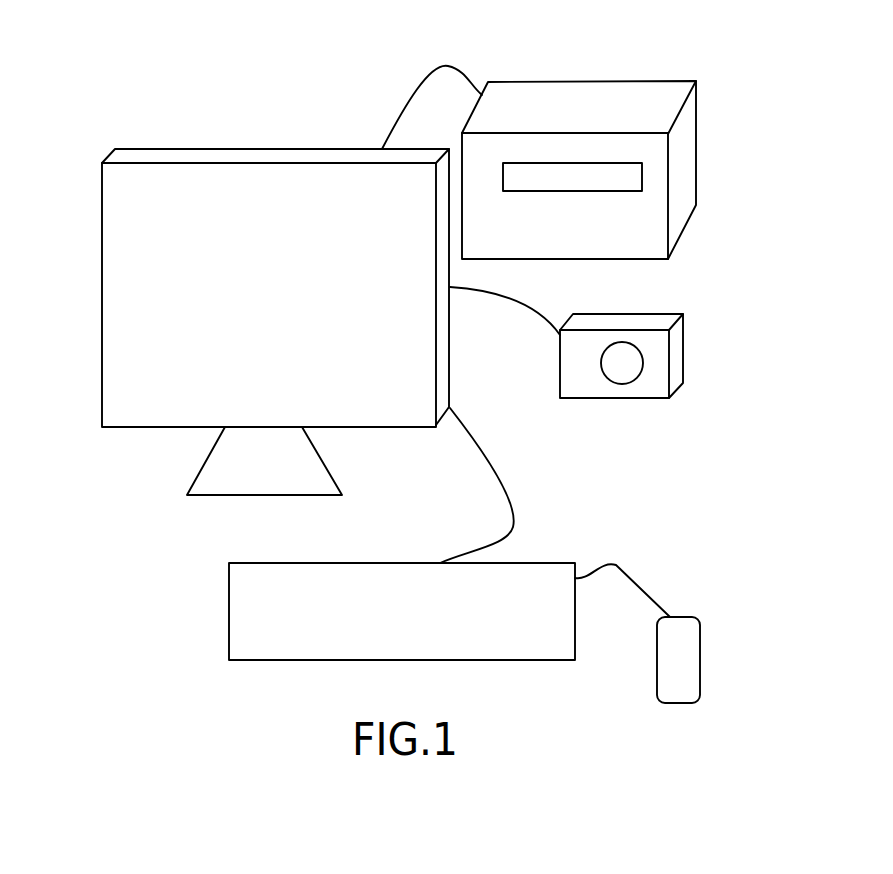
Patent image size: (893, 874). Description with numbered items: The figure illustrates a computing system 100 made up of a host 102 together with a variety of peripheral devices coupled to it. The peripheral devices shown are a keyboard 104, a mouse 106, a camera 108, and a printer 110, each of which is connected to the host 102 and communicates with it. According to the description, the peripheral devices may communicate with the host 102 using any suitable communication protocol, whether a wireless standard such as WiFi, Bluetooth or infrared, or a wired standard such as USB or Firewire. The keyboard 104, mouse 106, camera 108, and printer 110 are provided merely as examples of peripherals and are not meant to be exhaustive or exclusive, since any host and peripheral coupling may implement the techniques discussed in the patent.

The computing system 100 is at (120, 107).
The host 102 is at (102, 372).
The keyboard 104 is at (229, 598).
The mouse 106 is at (700, 634).
The camera 108 is at (683, 337).
The printer 110 is at (696, 143).